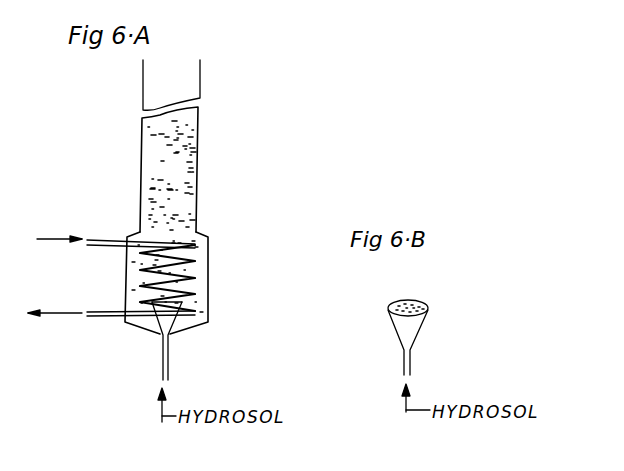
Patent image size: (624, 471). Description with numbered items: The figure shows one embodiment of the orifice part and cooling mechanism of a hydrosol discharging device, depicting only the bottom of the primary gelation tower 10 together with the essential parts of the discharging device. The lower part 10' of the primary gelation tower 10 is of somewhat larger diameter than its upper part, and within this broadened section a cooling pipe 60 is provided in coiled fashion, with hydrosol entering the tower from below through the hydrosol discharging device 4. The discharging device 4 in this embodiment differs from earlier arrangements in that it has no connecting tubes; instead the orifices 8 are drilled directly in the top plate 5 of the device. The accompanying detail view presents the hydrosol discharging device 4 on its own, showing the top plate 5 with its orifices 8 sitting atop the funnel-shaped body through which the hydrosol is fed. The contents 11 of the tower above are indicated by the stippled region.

In FIG. 6A, the hydrosol discharging device 4 is at (172, 327).
In FIG. 6B, the hydrosol discharging device 4 is at (412, 328).
In FIG. 6A, the top plate 5 is at (150, 295).
In FIG. 6B, the top plate 5 is at (410, 303).
In FIG. 6B, the orifices 8 is at (425, 305).
In FIG. 6A, the primary gelation tower 10 is at (199, 146).
In FIG. 6A, the lower part of the primary gelation tower 10' is at (195, 283).
In FIG. 6A, the hydrosol / liquid in tube 11 is at (186, 160).
In FIG. 6A, the cooling pipe 60 is at (197, 237).